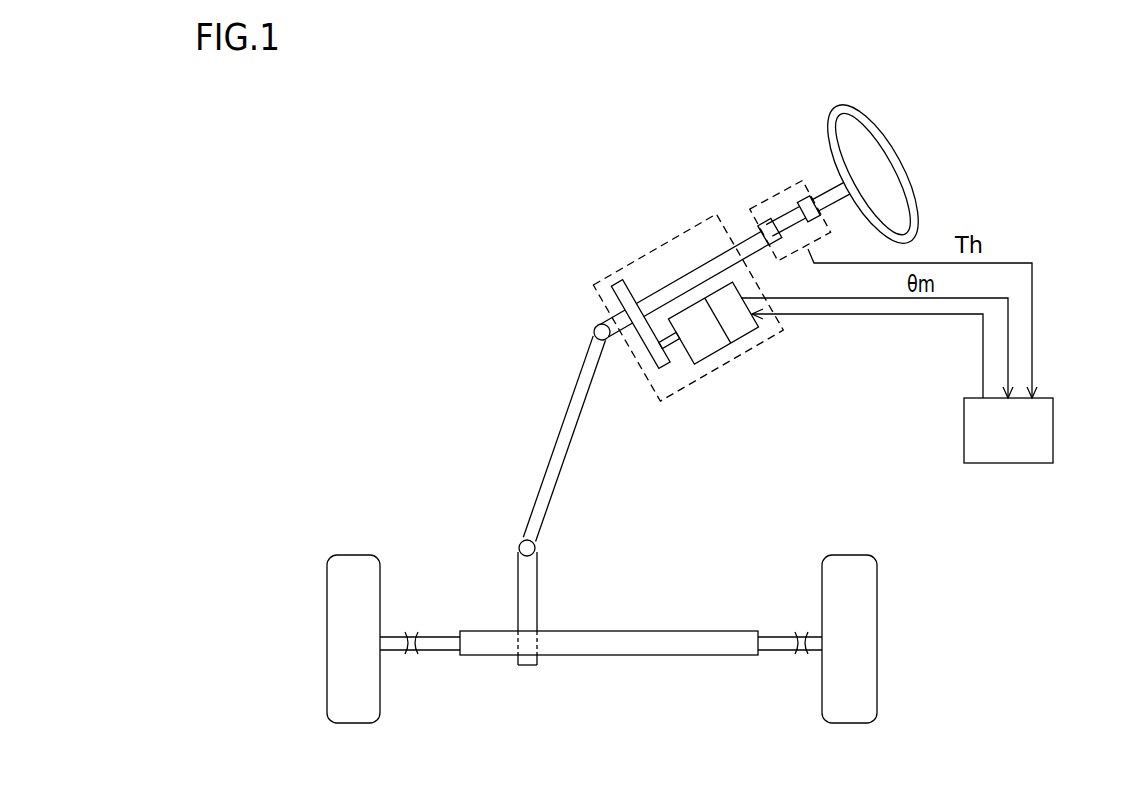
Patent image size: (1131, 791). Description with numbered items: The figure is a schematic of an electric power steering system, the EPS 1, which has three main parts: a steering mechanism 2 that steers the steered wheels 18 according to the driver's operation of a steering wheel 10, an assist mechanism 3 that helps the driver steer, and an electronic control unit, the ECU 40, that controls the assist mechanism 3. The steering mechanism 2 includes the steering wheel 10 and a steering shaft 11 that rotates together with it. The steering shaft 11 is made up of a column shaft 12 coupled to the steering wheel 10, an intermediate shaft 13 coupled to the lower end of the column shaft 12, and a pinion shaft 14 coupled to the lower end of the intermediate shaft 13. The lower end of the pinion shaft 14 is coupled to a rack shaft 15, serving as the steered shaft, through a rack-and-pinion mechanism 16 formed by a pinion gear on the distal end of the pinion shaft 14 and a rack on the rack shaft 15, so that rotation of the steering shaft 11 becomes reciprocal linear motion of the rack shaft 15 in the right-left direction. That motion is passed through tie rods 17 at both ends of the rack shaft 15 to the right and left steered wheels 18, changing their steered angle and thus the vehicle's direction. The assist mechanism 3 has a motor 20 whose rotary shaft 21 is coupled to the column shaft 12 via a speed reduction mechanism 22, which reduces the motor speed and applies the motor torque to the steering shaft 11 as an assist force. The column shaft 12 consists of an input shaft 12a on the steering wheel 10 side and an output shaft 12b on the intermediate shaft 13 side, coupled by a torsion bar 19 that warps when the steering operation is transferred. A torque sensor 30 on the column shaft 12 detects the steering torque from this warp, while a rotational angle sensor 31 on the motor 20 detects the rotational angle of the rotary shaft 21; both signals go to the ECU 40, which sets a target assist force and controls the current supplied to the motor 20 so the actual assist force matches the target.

The electric power steering system 1 is at (392, 183).
The steering mechanism 2 is at (430, 338).
The assist mechanism 3 is at (645, 252).
The steering wheel 10 is at (900, 168).
The steering shaft 11 is at (510, 307).
The column shaft 12 is at (595, 326).
The input shaft 12a is at (833, 187).
The output shaft 12b is at (687, 262).
The intermediate shaft 13 is at (559, 433).
The pinion shaft 14 is at (519, 548).
The rack shaft 15 is at (680, 656).
The rack-and-pinion mechanism 16 is at (510, 623).
The tie rods 17 is at (437, 651).
The steered wheels 18 is at (348, 724).
The torsion bar 19 is at (783, 212).
The motor 20 is at (715, 354).
The rotary shaft 21 is at (676, 360).
The speed reduction mechanism 22 is at (650, 364).
The torque sensor 30 is at (785, 186).
The rotational angle sensor 31 is at (750, 334).
The electronic control unit 40 is at (1053, 432).